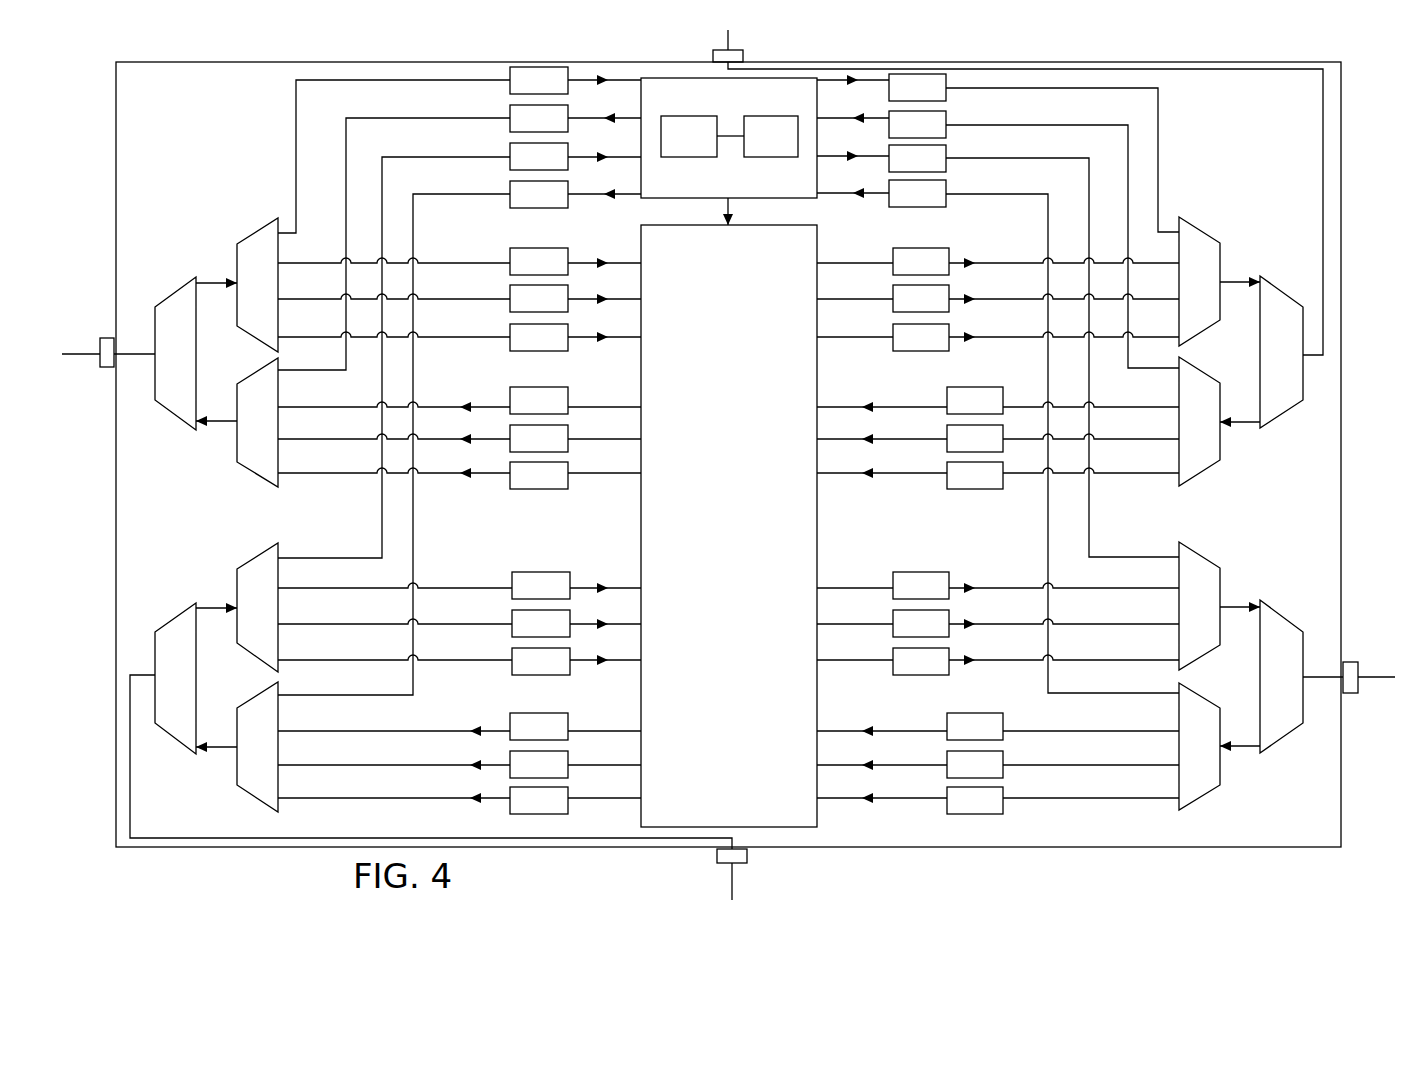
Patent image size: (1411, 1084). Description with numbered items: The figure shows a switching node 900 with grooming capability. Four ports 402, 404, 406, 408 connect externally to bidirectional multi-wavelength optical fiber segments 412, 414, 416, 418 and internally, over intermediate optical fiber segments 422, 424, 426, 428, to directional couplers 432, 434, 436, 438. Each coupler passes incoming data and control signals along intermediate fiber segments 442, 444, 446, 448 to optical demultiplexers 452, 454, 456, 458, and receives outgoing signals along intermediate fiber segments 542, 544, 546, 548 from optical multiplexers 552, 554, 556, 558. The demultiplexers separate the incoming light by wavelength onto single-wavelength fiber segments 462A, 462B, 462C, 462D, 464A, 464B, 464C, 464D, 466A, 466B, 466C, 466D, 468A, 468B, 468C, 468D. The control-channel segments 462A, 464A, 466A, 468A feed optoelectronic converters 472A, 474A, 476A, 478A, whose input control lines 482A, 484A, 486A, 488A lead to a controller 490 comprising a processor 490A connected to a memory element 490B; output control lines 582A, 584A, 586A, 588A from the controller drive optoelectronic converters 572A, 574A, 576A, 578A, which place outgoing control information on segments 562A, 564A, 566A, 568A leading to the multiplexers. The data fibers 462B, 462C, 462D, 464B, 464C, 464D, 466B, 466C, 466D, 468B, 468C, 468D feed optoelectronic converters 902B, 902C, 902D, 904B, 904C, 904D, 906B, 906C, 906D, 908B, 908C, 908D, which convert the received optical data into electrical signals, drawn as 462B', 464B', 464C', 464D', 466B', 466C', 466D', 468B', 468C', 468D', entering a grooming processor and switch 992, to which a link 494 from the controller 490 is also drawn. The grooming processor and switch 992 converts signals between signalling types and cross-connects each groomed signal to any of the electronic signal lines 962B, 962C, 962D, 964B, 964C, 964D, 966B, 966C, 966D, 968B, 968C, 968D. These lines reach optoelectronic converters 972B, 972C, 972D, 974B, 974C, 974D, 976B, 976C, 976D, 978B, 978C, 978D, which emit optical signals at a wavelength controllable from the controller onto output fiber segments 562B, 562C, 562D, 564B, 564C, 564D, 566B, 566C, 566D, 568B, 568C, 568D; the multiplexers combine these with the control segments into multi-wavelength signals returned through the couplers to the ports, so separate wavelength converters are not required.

The switching node 900 is at (168, 91).
The port 402 is at (100, 342).
The multi-wavelength optical fiber segment 412 is at (96, 366).
The intermediate optical fiber segment 422 is at (128, 361).
The port 404 is at (717, 61).
The multi-wavelength optical fiber segment 414 is at (747, 59).
The intermediate optical fiber segment 424 is at (1316, 96).
The port 406 is at (1357, 668).
The multi-wavelength optical fiber segment 416 is at (1362, 687).
The intermediate optical fiber segment 426 is at (1322, 680).
The port 408 is at (748, 863).
The multi-wavelength optical fiber segment 418 is at (732, 892).
The intermediate optical fiber segment 428 is at (373, 836).
The directional coupler 432 is at (196, 366).
The directional coupler 434 is at (1303, 362).
The directional coupler 436 is at (1303, 686).
The directional coupler 438 is at (196, 689).
The intermediate optical fiber segment 442 is at (209, 286).
The intermediate optical fiber segment 444 is at (1249, 425).
The intermediate optical fiber segment 446 is at (1249, 746).
The intermediate optical fiber segment 448 is at (209, 611).
The optical demultiplexer 452 is at (278, 294).
The optical demultiplexer 454 is at (1221, 432).
The optical demultiplexer 456 is at (1221, 757).
The optical demultiplexer 458 is at (278, 617).
The intermediate optical fiber segment 542 is at (209, 424).
The intermediate optical fiber segment 544 is at (1249, 285).
The intermediate optical fiber segment 546 is at (1249, 607).
The intermediate optical fiber segment 548 is at (209, 750).
The optical multiplexer 552 is at (278, 434).
The optical multiplexer 554 is at (1221, 292).
The optical multiplexer 556 is at (1221, 617).
The optical multiplexer 558 is at (278, 757).
The single-wavelength optical fiber segment 462A is at (296, 132).
The single-wavelength input optical fiber 462B is at (394, 253).
The single-wavelength input optical fiber 462C is at (433, 299).
The single-wavelength input optical fiber 462D is at (433, 337).
The converted wavelength channel 462B' is at (605, 287).
The single-wavelength optical fiber segment 562A is at (373, 118).
The single-wavelength output optical fiber segment 562B is at (426, 407).
The single-wavelength output optical fiber segment 562C is at (426, 439).
The single-wavelength output optical fiber segment 562D is at (426, 473).
The single-wavelength optical fiber segment 468A is at (423, 154).
The single-wavelength input optical fiber 468B is at (395, 576).
The single-wavelength input optical fiber 468C is at (395, 612).
The single-wavelength input optical fiber 468D is at (395, 648).
The converted wavelength channel 468B' is at (607, 573).
The converted wavelength channel 468C' is at (607, 609).
The converted wavelength channel 468D' is at (608, 645).
The single-wavelength optical fiber segment 568A is at (438, 192).
The single-wavelength output optical fiber segment 568B is at (402, 731).
The single-wavelength output optical fiber segment 568C is at (402, 765).
The single-wavelength output optical fiber segment 568D is at (402, 798).
The single-wavelength optical fiber segment 464A is at (1080, 125).
The single-wavelength input optical fiber 464B is at (1091, 390).
The single-wavelength input optical fiber 464C is at (1091, 424).
The single-wavelength input optical fiber 464D is at (1091, 458).
The converted wavelength channel 464B' is at (882, 393).
The converted wavelength channel 464C' is at (882, 426).
The converted wavelength channel 464D' is at (882, 461).
The single-wavelength optical fiber segment 564A is at (1160, 92).
The single-wavelength output optical fiber segment 564B is at (1034, 258).
The single-wavelength output optical fiber segment 564C is at (1034, 294).
The single-wavelength output optical fiber segment 564D is at (1034, 332).
The single-wavelength optical fiber segment 466A is at (1018, 192).
The single-wavelength input optical fiber 466B is at (1091, 716).
The single-wavelength input optical fiber 466C is at (1091, 750).
The single-wavelength input optical fiber 466D is at (1091, 783).
The converted wavelength channel 466B' is at (882, 718).
The converted wavelength channel 466C' is at (882, 752).
The converted wavelength channel 466D' is at (882, 786).
The single-wavelength optical fiber segment 566A is at (1032, 154).
The single-wavelength output optical fiber segment 566B is at (1040, 586).
The single-wavelength output optical fiber segment 566C is at (1040, 622).
The single-wavelength output optical fiber segment 566D is at (1040, 658).
The optoelectronic converter 472A is at (564, 90).
The optoelectronic converter 572A is at (564, 128).
The optoelectronic converter 478A is at (564, 166).
The optoelectronic converter 578A is at (564, 204).
The optoelectronic converter 574A is at (943, 97).
The optoelectronic converter 474A is at (943, 134).
The optoelectronic converter 576A is at (943, 168).
The optoelectronic converter 476A is at (943, 203).
The input control line 482A is at (633, 88).
The output control line 582A is at (633, 124).
The input control line 488A is at (633, 163).
The output control line 588A is at (633, 201).
The output control line 584A is at (884, 86).
The input control line 484A is at (884, 124).
The output control line 586A is at (884, 161).
The input control line 486A is at (884, 199).
The controller 490 is at (815, 106).
The processor 490A is at (702, 136).
The memory element 490B is at (771, 136).
The control signal 494 is at (734, 207).
The grooming processor and switch 992 is at (749, 573).
The optoelectronic converter 902B is at (564, 271).
The optoelectronic converter 902C is at (564, 308).
The optoelectronic converter 902D is at (564, 347).
The optoelectronic converter 972B is at (564, 410).
The optoelectronic converter 972C is at (564, 448).
The optoelectronic converter 972D is at (564, 485).
The optoelectronic converter 908B is at (566, 595).
The optoelectronic converter 908C is at (566, 633).
The optoelectronic converter 908D is at (566, 671).
The optoelectronic converter 978B is at (564, 736).
The optoelectronic converter 978C is at (564, 774).
The optoelectronic converter 978D is at (564, 810).
The optoelectronic converter 974B is at (946, 271).
The optoelectronic converter 974C is at (946, 308).
The optoelectronic converter 974D is at (946, 347).
The optoelectronic converter 904B is at (1000, 410).
The optoelectronic converter 904C is at (1000, 448).
The optoelectronic converter 904D is at (1000, 485).
The optoelectronic converter 976B is at (946, 595).
The optoelectronic converter 976C is at (946, 633).
The optoelectronic converter 976D is at (946, 671).
The optoelectronic converter 906B is at (1000, 736).
The optoelectronic converter 906C is at (1000, 774).
The optoelectronic converter 906D is at (1000, 810).
The electronic signal line 962B is at (572, 407).
The electronic signal line 962C is at (572, 439).
The electronic signal line 962D is at (572, 473).
The electronic signal line 968B is at (572, 731).
The electronic signal line 968C is at (572, 765).
The electronic signal line 968D is at (572, 798).
The electronic signal line 964B is at (887, 258).
The electronic signal line 964C is at (887, 294).
The electronic signal line 964D is at (887, 332).
The electronic signal line 966B is at (887, 586).
The electronic signal line 966C is at (887, 622).
The electronic signal line 966D is at (887, 658).